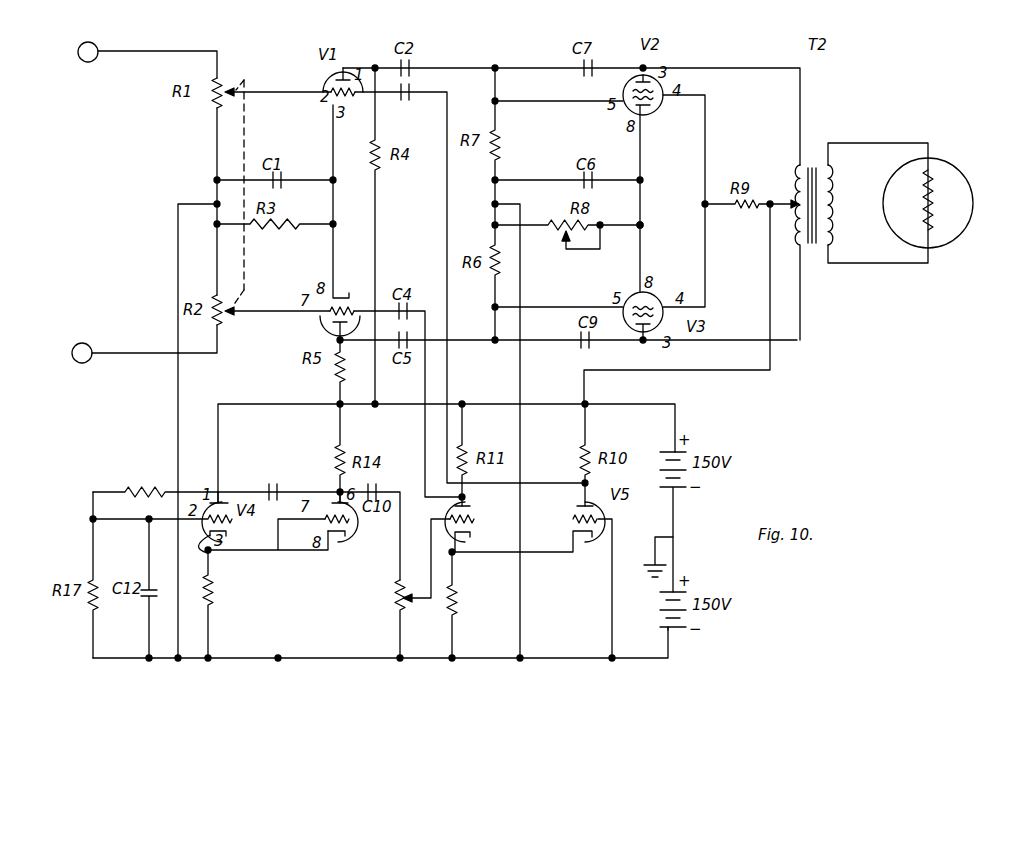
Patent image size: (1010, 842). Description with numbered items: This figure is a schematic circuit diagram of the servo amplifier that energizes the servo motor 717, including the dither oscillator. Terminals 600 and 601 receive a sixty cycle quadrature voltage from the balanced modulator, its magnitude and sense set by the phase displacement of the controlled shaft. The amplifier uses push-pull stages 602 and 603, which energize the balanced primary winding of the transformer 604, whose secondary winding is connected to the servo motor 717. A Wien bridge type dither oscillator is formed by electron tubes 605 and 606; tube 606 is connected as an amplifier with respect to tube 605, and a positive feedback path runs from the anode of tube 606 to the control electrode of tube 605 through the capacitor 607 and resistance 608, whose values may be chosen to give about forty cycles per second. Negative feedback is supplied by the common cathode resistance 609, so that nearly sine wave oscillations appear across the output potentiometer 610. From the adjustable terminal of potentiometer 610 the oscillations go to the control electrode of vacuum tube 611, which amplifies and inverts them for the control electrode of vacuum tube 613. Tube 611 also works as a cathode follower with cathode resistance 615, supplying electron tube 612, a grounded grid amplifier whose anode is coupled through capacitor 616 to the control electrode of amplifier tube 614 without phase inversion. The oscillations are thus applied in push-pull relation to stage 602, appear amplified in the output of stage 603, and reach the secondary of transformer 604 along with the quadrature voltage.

The terminal 600 is at (74, 50).
The terminal 601 is at (70, 352).
The push-pull stage 602 is at (366, 219).
The push-pull stage 603 is at (674, 217).
The transformer 604 is at (809, 252).
The electron tube 605 is at (210, 556).
The electron tube 606 is at (350, 542).
The capacitor 607 is at (279, 483).
The resistance 608 is at (155, 482).
The common cathode resistance 609 is at (225, 604).
The output potentiometer 610 is at (385, 619).
The vacuum tube 611 is at (474, 527).
The electron tube 612 is at (604, 518).
The vacuum tube 613 is at (322, 322).
The amplifier tube 614 is at (330, 80).
The cathode resistance 615 is at (470, 605).
The capacitor 616 is at (406, 105).
The servo motor 717 is at (1000, 237).